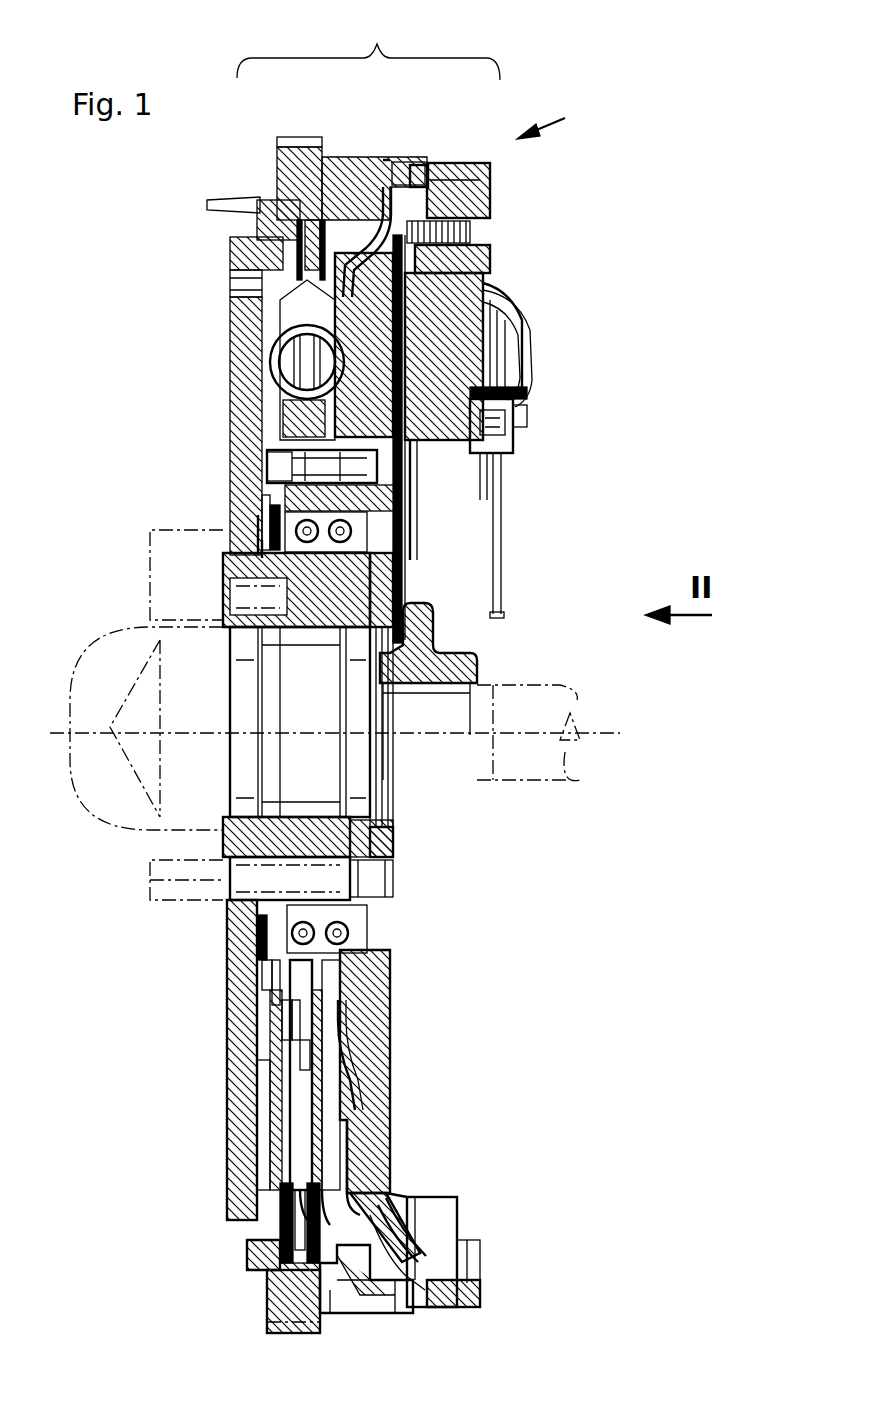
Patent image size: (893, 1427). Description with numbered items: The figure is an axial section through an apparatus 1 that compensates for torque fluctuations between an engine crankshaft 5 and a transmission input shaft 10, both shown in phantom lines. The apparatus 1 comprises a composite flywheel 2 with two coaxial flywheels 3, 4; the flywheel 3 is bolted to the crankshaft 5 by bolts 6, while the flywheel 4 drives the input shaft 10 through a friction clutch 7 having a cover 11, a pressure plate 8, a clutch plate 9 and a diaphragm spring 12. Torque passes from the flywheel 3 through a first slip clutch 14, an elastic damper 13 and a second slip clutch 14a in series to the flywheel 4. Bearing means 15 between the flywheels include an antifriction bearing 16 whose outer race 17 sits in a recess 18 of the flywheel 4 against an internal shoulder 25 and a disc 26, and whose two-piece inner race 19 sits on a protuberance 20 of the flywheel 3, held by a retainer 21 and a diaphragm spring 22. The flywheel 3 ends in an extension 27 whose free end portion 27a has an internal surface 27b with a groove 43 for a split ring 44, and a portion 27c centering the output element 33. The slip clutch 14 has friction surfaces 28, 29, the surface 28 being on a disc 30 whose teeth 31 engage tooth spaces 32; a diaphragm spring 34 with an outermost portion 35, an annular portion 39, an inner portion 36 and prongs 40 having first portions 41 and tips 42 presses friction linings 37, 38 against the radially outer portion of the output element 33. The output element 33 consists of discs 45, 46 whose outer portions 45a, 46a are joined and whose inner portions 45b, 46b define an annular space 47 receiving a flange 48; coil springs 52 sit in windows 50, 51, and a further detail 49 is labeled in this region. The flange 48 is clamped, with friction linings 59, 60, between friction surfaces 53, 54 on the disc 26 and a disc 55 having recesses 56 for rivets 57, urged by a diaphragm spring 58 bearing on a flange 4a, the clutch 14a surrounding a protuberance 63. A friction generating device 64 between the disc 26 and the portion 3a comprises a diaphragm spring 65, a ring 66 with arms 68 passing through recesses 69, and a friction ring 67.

The apparatus 1 is at (550, 116).
The composite flywheel 2 is at (368, 44).
The flywheel 3 is at (272, 202).
The radially extending portion of the flywheel 3a is at (240, 957).
The flywheel 4 is at (490, 195).
The radially extending flange 4a is at (363, 1090).
The crankshaft 5 is at (110, 780).
The bolts 6 is at (400, 858).
The friction clutch 7 is at (520, 302).
The pressure plate 8 is at (527, 421).
The clutch plate 9 is at (477, 662).
The input shaft 10 is at (560, 697).
The cover 11 is at (530, 320).
The diaphragm spring 12 is at (404, 556).
The elastic damper 13 is at (280, 373).
The first slip clutch 14 is at (231, 245).
The second slip clutch 14a is at (343, 1000).
The bearing means 15 is at (347, 493).
The antifriction bearing 16 is at (365, 543).
The outer race 17 is at (420, 512).
The axial recess 18 is at (282, 458).
The inner race 19 is at (227, 573).
The cylindrical protuberance 20 is at (257, 903).
The disc-shaped retainer 21 is at (397, 835).
The diaphragm spring 22 is at (403, 897).
The internal shoulder 25 is at (367, 945).
The disc 26 is at (270, 1020).
The extension 27 is at (333, 157).
The free end portion 27a is at (403, 167).
The internal surface 27b is at (385, 160).
The portion of the internal surface 27c is at (284, 137).
The friction surface 28 is at (375, 1222).
The friction surface 29 is at (279, 1207).
The disc 30 is at (412, 1228).
The teeth 31 is at (340, 1268).
The tooth spaces 32 is at (345, 1262).
The output element 33 is at (255, 1247).
The diaphragm spring 34 is at (395, 1258).
The radially outermost portion 35 is at (482, 1290).
The radially inner portion 36 is at (352, 1190).
The friction lining 37 is at (282, 1263).
The friction lining 38 is at (282, 1217).
The annular portion 39 is at (470, 1250).
The prongs 40 is at (395, 1210).
The first portion 41 is at (470, 240).
The tip 42 is at (470, 262).
The groove 43 is at (420, 172).
The split ring 44 is at (460, 182).
The disc 45 is at (475, 300).
The radially outer portion 45a is at (345, 200).
The radially inner portion 45b is at (327, 1113).
The disc 46 is at (258, 300).
The radially outer portion 46a is at (218, 201).
The radially inner portion 46b is at (268, 1092).
The annular space 47 is at (287, 1150).
The flange 48 is at (322, 1067).
The cover wall 49 is at (520, 340).
The window 50 is at (273, 333).
The window 51 is at (523, 363).
The coil springs 52 is at (280, 360).
The friction surface 53 is at (293, 1033).
The friction surface 54 is at (340, 1023).
The disc 55 is at (357, 1041).
The recesses 56 is at (517, 448).
The rivets 57 is at (523, 468).
The diaphragm spring 58 is at (527, 393).
The friction lining 59 is at (293, 1047).
The friction lining 60 is at (307, 1060).
The axial protuberance 63 is at (257, 947).
The friction generating device 64 is at (262, 500).
The diaphragm spring 65 is at (262, 548).
The ring 66 is at (257, 533).
The friction ring 67 is at (270, 512).
The arms 68 is at (262, 980).
The recesses 69 is at (273, 993).